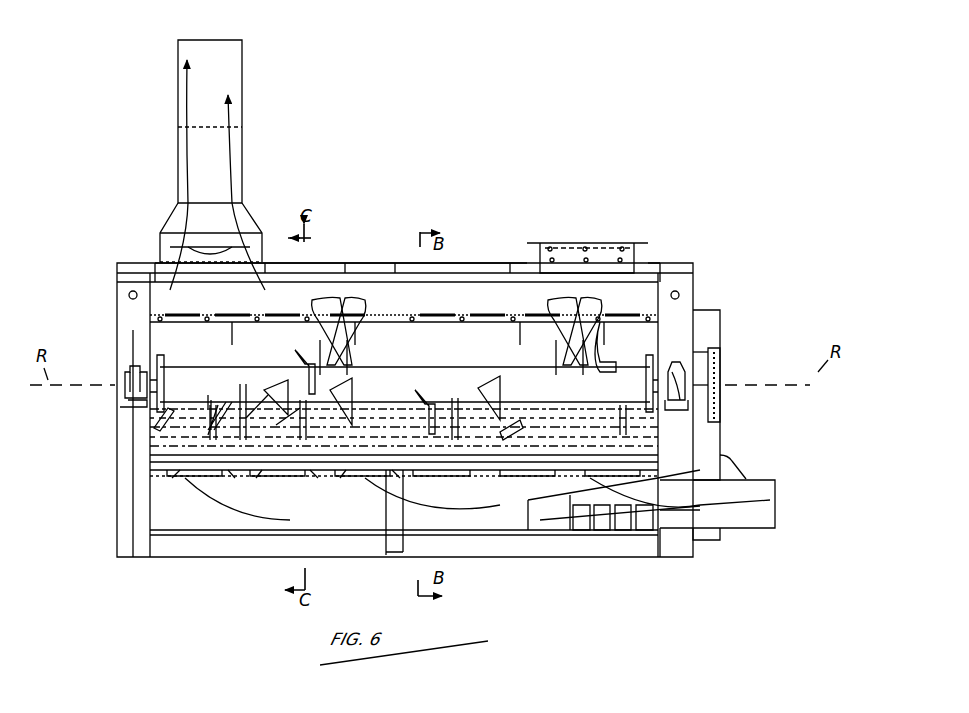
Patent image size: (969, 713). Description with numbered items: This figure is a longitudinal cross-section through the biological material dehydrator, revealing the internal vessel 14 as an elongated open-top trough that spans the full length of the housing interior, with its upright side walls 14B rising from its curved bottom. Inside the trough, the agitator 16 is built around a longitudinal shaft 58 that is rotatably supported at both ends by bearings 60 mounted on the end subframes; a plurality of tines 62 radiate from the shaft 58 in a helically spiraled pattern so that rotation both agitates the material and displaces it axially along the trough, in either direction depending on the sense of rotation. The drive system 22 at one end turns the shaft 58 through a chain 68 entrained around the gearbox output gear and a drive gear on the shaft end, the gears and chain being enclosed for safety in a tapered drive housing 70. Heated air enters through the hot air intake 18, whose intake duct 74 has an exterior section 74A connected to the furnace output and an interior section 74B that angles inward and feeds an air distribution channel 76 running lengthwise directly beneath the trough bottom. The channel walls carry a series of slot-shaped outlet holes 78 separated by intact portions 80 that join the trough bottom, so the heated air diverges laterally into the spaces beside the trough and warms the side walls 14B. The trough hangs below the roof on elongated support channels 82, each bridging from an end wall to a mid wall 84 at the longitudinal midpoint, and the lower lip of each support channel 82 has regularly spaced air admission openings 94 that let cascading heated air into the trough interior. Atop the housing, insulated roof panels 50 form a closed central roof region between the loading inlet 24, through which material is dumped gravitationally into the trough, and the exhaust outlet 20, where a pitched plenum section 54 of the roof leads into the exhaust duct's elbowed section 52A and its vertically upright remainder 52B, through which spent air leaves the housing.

The exhaust outlet 20 is at (142, 120).
The internal vessel 14 is at (312, 474).
The side walls 14B is at (510, 360).
The agitator 16 is at (202, 384).
The hot air intake 18 is at (782, 512).
The drive system 22 is at (737, 403).
The loading inlet 24 is at (606, 240).
The insulated roof panels 50 is at (320, 267).
The elbowed section 52A is at (240, 200).
The vertically upright remainder of the duct 52B is at (233, 71).
The pitched plenum section 54 is at (262, 232).
The longitudinal shaft 58 is at (421, 377).
The bearings 60 is at (130, 388).
The tines 62 is at (422, 343).
The chain 68 is at (716, 354).
The drive housing 70 is at (710, 326).
The intake duct 74 is at (755, 493).
The exterior section of the intake duct 74A is at (760, 528).
The interior section of the air intake duct 74B is at (562, 520).
The air distribution channel 76 is at (466, 510).
The outlet holes 78 is at (190, 472).
The intact portions 80 is at (237, 472).
The support channels 82 is at (212, 320).
The mid wall 84 is at (400, 520).
The air admission openings 94 is at (273, 325).